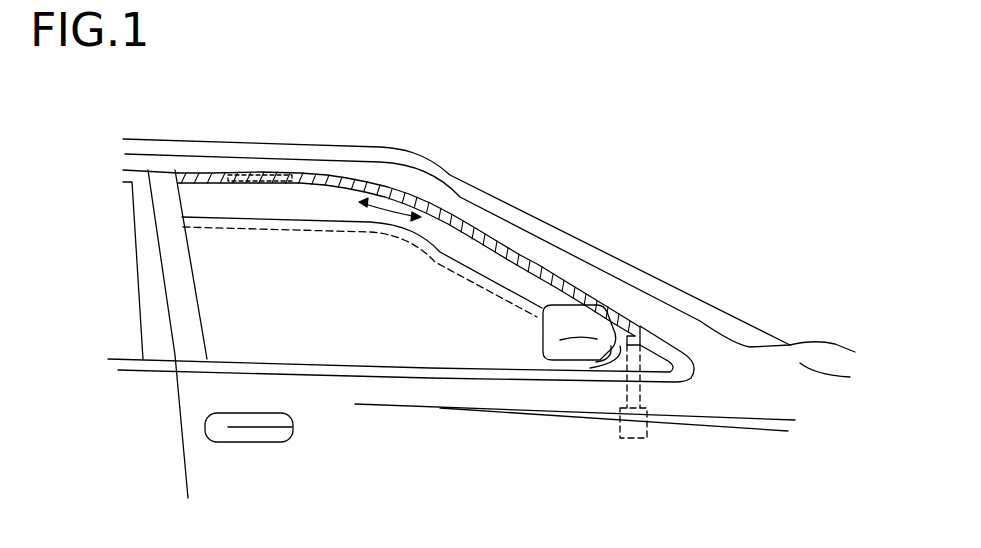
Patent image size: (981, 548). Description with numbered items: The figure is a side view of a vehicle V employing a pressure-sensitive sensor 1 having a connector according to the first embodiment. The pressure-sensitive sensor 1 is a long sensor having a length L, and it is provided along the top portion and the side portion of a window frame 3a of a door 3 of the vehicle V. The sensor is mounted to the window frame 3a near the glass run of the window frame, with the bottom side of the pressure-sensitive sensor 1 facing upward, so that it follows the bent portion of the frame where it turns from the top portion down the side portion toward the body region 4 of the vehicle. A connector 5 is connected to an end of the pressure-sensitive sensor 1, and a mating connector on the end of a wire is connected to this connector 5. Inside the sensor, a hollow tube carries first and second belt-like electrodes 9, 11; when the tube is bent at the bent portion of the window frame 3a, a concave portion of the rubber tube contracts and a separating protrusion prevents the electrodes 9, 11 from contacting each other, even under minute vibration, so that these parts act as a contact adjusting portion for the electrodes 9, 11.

The pressure-sensitive sensor 1 is at (377, 183).
The door 3 is at (343, 423).
The window frame 3a is at (535, 246).
The vehicle body side 4 is at (417, 352).
The connector 5 is at (632, 438).
The first electrode 9 is at (263, 170).
The second electrode 11 is at (273, 185).
The vehicle V is at (345, 140).
The length L is at (387, 213).